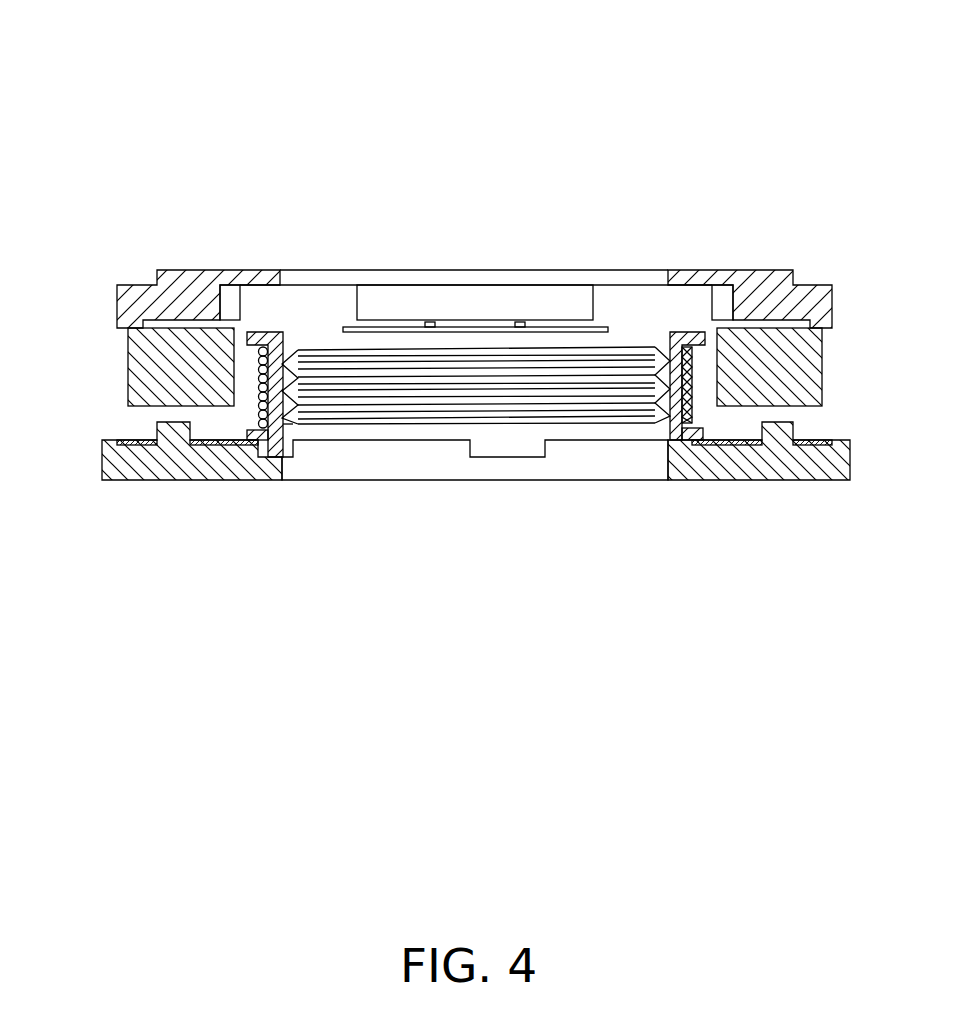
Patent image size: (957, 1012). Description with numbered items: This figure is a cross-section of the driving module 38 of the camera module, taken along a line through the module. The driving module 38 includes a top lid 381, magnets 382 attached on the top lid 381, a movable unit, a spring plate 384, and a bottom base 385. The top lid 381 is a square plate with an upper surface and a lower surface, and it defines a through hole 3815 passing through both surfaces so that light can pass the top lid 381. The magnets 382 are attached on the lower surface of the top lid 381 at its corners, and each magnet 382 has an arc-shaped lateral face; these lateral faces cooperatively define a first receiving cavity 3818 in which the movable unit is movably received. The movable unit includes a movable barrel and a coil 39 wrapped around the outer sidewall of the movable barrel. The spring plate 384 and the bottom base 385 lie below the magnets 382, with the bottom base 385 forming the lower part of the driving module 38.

The driving module 38 is at (373, 41).
The top lid 381 is at (745, 288).
The through hole 3815 is at (470, 282).
The magnets 382 is at (150, 368).
The first receiving cavity 3818 is at (250, 378).
The coil 39 is at (685, 447).
The spring plate 384 is at (143, 447).
The bottom base 385 is at (780, 463).